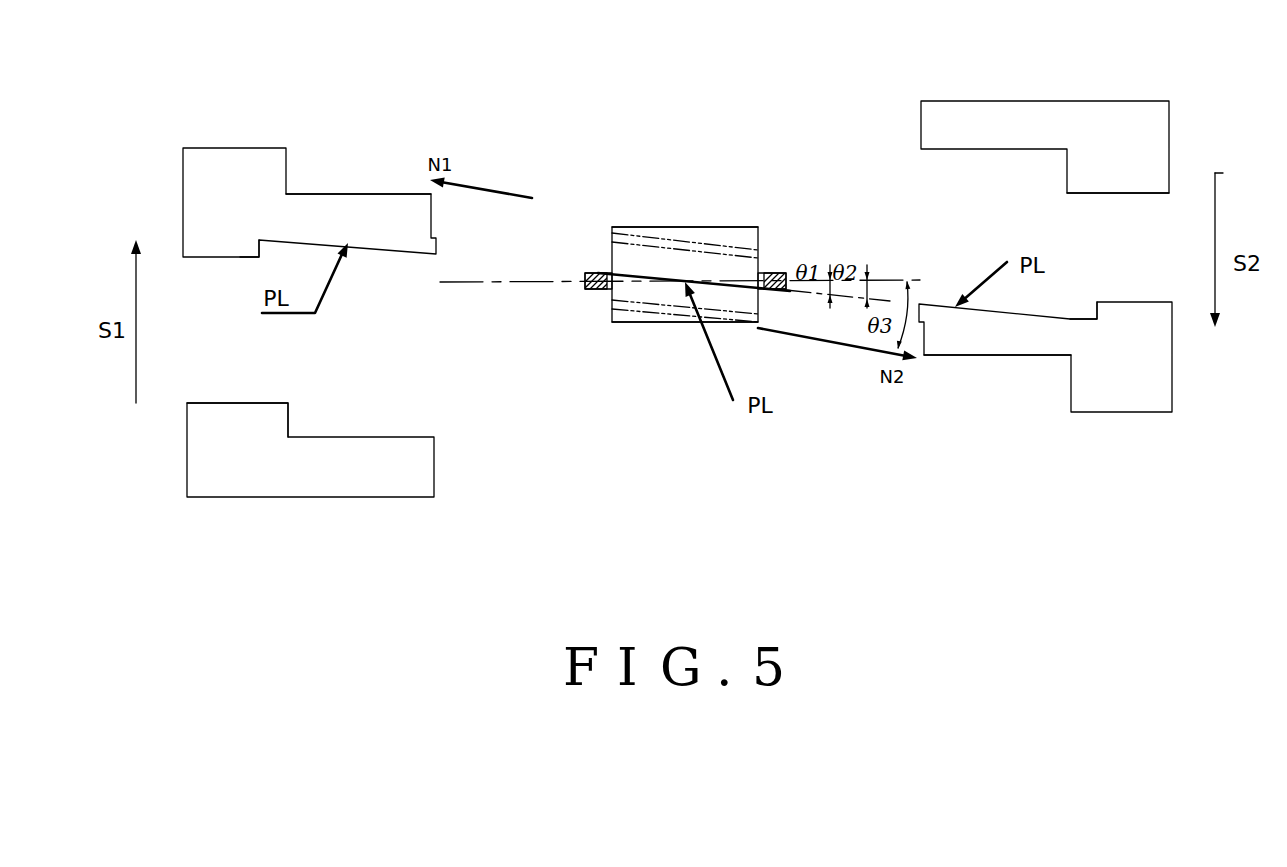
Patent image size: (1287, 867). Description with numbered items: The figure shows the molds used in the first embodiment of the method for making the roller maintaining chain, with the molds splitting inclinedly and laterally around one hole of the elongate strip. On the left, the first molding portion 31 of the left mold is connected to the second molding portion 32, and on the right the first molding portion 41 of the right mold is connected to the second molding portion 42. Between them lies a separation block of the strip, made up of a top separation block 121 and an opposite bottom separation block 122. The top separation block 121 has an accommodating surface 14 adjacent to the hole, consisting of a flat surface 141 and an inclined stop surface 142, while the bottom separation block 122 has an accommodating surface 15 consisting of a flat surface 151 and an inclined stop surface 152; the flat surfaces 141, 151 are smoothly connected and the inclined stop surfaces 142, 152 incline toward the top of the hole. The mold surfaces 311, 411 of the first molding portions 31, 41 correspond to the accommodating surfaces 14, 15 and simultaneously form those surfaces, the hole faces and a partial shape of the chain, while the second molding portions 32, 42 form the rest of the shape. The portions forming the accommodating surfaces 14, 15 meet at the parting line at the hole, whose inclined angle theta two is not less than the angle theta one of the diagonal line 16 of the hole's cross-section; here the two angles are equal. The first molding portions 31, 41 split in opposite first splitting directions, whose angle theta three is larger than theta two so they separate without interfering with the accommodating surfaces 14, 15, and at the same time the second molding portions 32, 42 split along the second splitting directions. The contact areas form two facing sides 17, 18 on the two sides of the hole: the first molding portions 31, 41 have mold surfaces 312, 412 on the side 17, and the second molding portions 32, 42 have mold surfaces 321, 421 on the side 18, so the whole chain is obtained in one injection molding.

The first molding portion 31 is at (247, 150).
The mold surface 311 is at (356, 208).
The mold surface 312 is at (270, 242).
The second molding portion 32 is at (223, 470).
The mold surface 321 is at (269, 403).
The first molding portion 41 is at (1155, 393).
The mold surface 411 is at (1010, 345).
The mold surface 412 is at (1077, 318).
The second molding portion 42 is at (1158, 110).
The mold surface 421 is at (1107, 193).
The accommodating surface 14 is at (778, 162).
The flat surface 141 is at (767, 257).
The inclined stop surface 142 is at (733, 238).
The top separation block 121 is at (692, 226).
The bottom separation block 122 is at (688, 323).
The accommodating surface 15 is at (640, 407).
The flat surface 151 is at (643, 290).
The inclined stop surface 152 is at (642, 322).
The diagonal line 16 is at (647, 273).
The facing side 17 is at (600, 273).
The facing side 18 is at (778, 272).